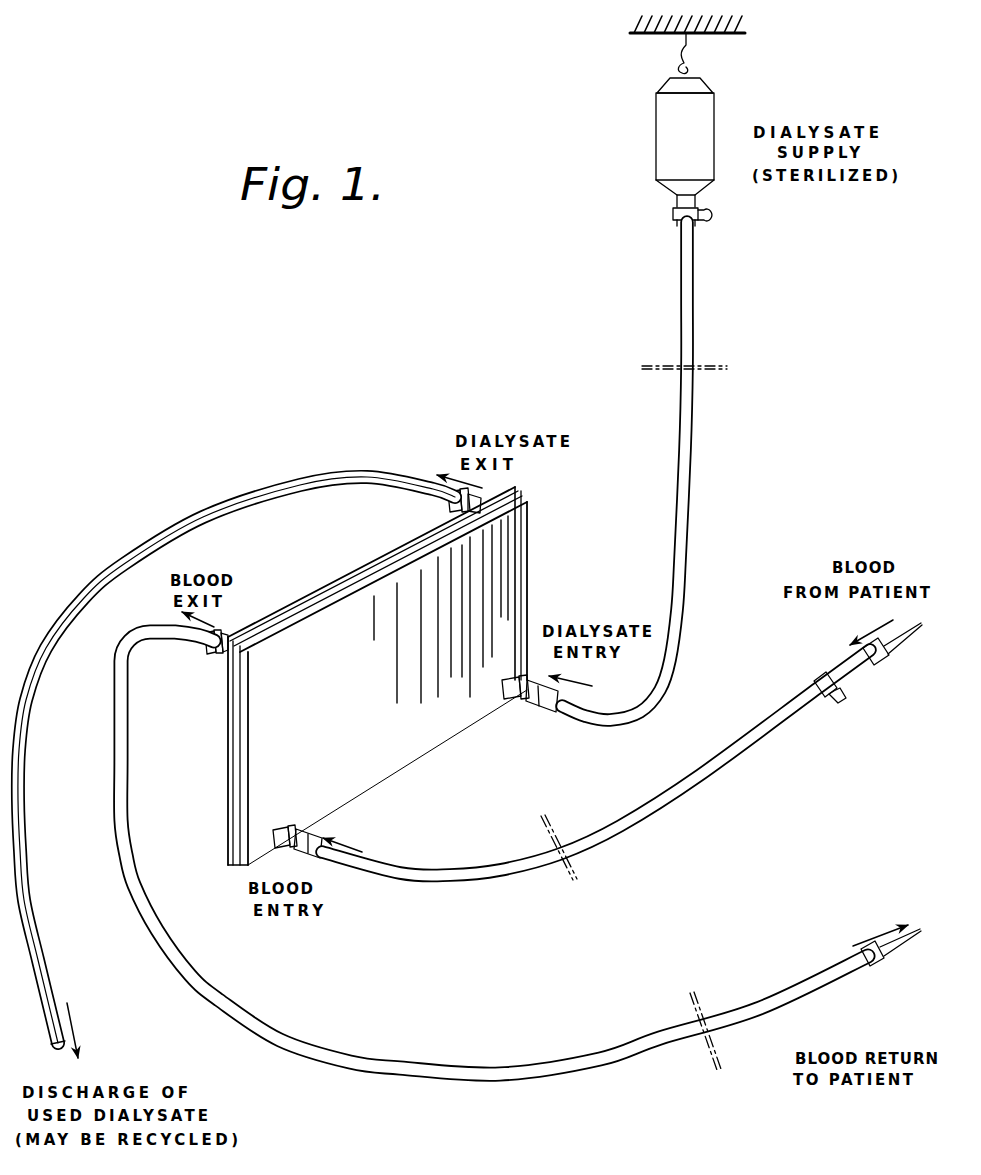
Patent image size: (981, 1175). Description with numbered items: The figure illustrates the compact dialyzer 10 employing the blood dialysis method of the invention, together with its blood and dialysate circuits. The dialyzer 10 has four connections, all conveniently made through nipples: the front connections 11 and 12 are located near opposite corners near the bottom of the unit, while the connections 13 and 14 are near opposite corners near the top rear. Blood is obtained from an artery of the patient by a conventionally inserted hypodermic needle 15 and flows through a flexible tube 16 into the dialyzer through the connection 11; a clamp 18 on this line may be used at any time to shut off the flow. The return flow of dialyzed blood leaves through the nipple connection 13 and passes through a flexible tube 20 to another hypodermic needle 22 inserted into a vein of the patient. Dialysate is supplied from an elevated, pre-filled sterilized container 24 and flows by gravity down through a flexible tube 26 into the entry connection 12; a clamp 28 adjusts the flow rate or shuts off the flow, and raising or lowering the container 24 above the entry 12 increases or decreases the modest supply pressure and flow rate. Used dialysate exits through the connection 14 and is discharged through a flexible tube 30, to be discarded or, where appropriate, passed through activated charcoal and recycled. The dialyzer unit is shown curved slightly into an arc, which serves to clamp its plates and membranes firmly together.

The dialyzer 10 is at (537, 572).
The connection 11 is at (330, 834).
The connection 12 is at (548, 708).
The connection 13 is at (215, 655).
The connection 14 is at (445, 505).
The hypodermic needle 15 is at (905, 640).
The flexible tube 16 is at (504, 879).
The clamp 18 is at (820, 698).
The flexible tube 20 is at (404, 1062).
The hypodermic needle 22 is at (898, 950).
The container 24 is at (656, 136).
The flexible tube 26 is at (687, 470).
The clamp 28 is at (688, 228).
The flexible tube 30 is at (42, 942).